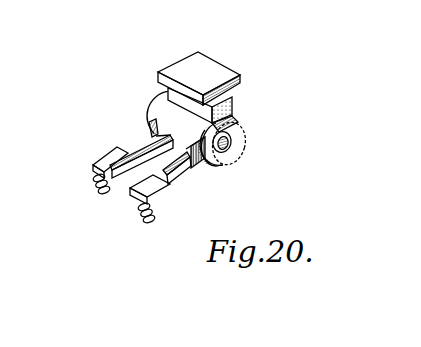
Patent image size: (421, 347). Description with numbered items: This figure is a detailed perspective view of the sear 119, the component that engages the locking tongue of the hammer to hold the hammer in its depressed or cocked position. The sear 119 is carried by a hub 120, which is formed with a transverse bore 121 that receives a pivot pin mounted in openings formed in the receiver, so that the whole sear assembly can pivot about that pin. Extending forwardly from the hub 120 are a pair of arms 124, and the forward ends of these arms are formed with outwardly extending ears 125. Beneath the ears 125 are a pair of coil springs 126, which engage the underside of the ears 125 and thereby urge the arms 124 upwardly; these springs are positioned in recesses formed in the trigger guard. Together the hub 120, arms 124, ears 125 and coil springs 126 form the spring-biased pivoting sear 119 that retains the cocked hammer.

The sear 119 is at (182, 63).
The hub 120 is at (239, 131).
The transverse bore 121 is at (231, 150).
The arms 124 is at (146, 144).
The ears 125 is at (112, 158).
The coil springs 126 is at (98, 198).